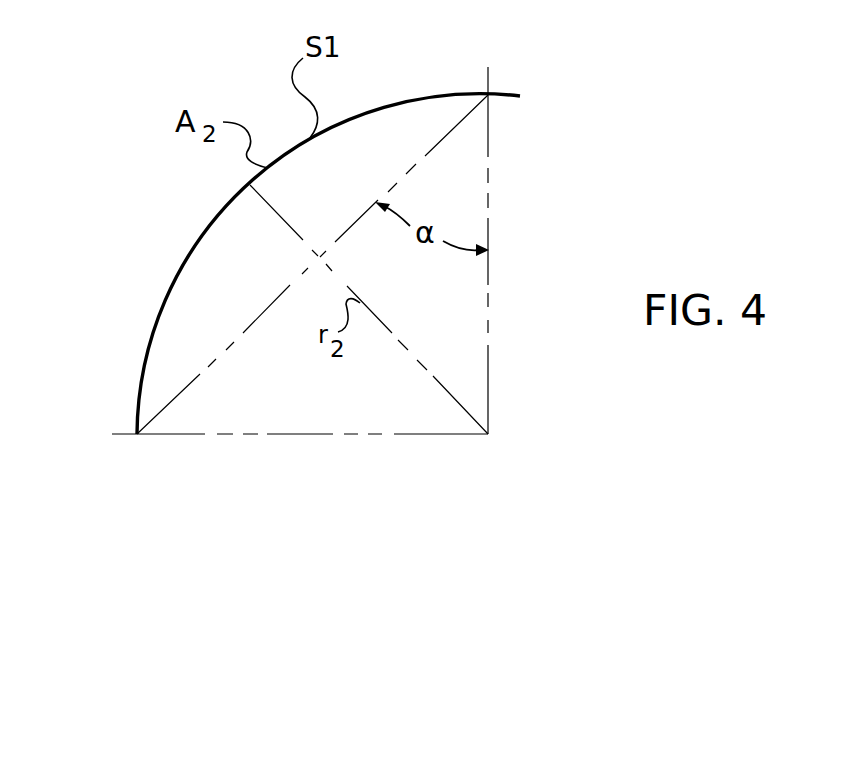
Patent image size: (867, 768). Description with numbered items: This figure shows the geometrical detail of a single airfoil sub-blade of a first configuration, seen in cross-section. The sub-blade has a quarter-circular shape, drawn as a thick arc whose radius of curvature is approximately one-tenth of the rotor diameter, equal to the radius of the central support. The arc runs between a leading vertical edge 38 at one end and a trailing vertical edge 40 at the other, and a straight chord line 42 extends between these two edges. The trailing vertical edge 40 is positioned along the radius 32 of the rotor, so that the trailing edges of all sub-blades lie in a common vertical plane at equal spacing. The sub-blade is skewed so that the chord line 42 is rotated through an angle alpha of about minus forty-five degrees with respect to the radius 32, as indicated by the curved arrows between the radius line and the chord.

The trailing vertical edge 40 is at (520, 95).
The radius 32 is at (488, 160).
The leading vertical edge 38 is at (137, 434).
The chord line 42 is at (228, 342).